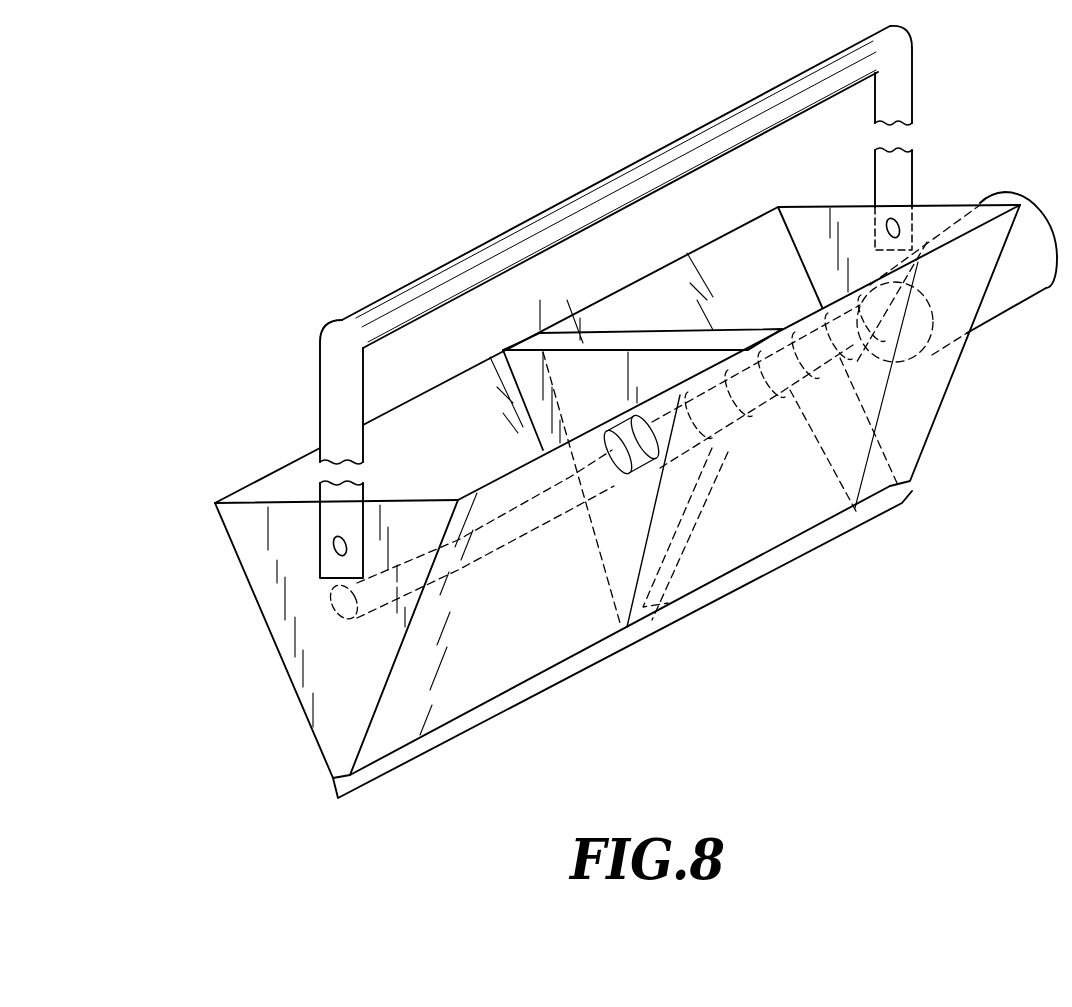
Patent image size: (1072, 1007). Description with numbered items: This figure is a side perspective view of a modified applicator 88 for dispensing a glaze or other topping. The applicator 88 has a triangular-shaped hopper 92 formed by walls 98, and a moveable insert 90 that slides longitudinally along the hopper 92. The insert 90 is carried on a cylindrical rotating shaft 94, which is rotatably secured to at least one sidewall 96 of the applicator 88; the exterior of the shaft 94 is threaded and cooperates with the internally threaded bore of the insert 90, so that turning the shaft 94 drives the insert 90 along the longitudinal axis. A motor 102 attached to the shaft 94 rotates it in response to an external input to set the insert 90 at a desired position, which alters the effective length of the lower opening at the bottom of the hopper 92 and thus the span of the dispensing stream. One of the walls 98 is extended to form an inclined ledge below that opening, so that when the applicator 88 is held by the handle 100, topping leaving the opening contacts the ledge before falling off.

The applicator 88 is at (242, 290).
The moveable insert 90 is at (580, 331).
The hopper 92 is at (433, 410).
The rotating shaft 94 is at (363, 803).
The sidewall 96 is at (260, 590).
The walls 98 is at (278, 467).
The handle 100 is at (580, 191).
The motor 102 is at (1014, 190).